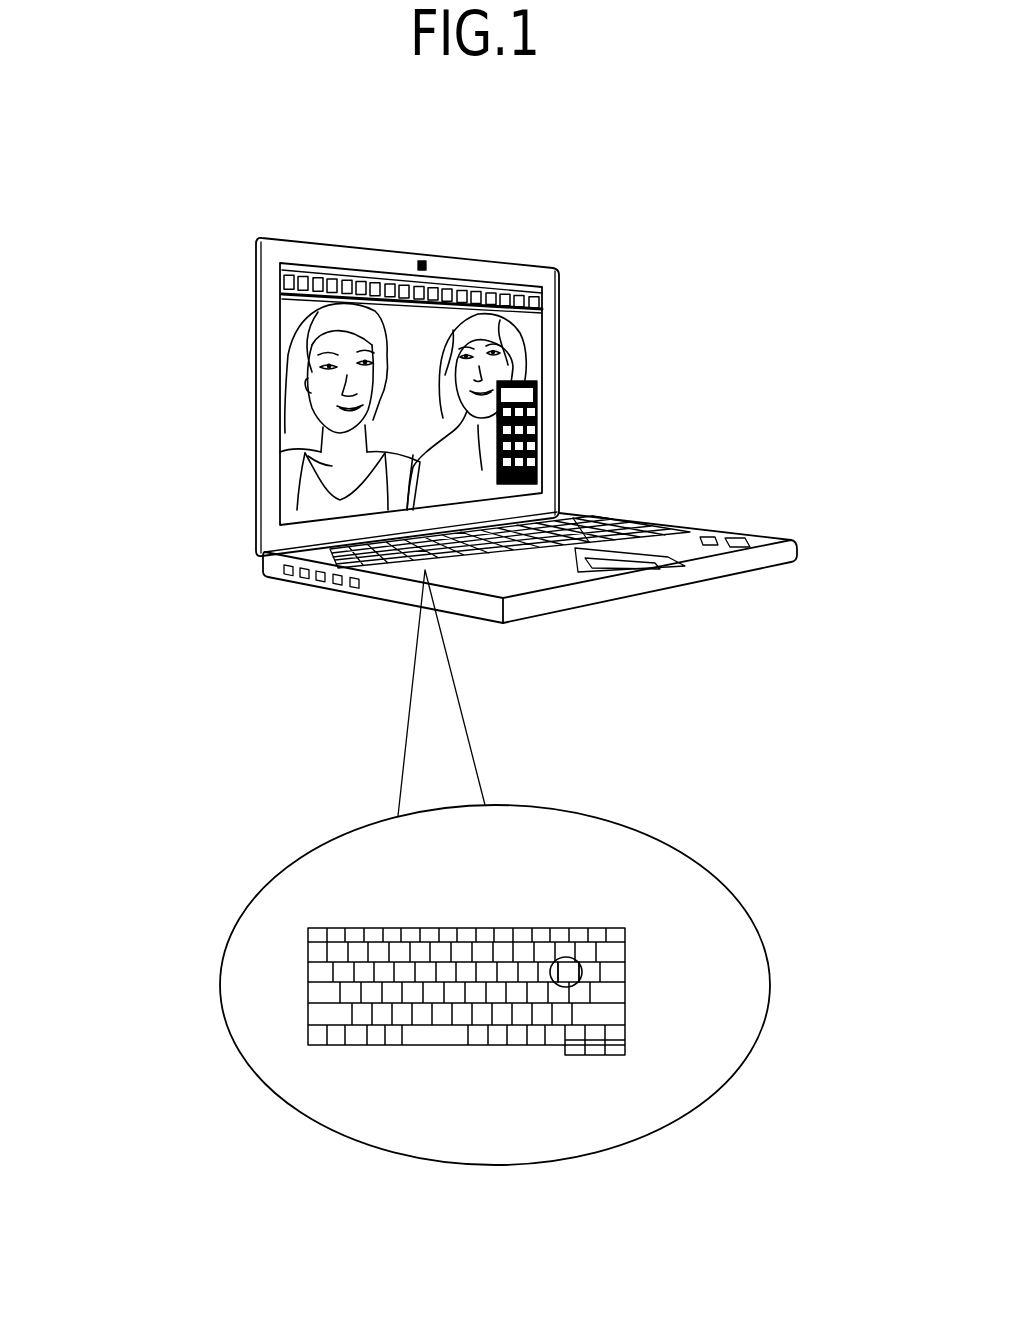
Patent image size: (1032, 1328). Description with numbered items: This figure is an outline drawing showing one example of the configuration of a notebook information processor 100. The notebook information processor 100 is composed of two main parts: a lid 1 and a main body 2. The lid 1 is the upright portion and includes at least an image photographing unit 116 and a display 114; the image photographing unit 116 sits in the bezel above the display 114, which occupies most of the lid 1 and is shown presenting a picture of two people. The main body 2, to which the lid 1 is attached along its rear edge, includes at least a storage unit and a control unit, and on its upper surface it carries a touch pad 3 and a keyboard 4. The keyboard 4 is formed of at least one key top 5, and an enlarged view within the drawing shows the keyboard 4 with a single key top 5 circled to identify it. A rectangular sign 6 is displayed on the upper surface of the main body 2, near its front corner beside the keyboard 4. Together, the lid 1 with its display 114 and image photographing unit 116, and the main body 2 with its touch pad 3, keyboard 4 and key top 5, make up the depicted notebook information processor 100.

The notebook information processor 100 is at (228, 212).
The lid 1 is at (555, 327).
The display 114 is at (483, 425).
The image photographing unit 116 is at (423, 260).
The main body 2 is at (270, 571).
The touch pad 3 is at (565, 563).
The keyboard 4 is at (388, 573).
The key top 5 is at (590, 957).
The rectangular sign 6 is at (746, 548).